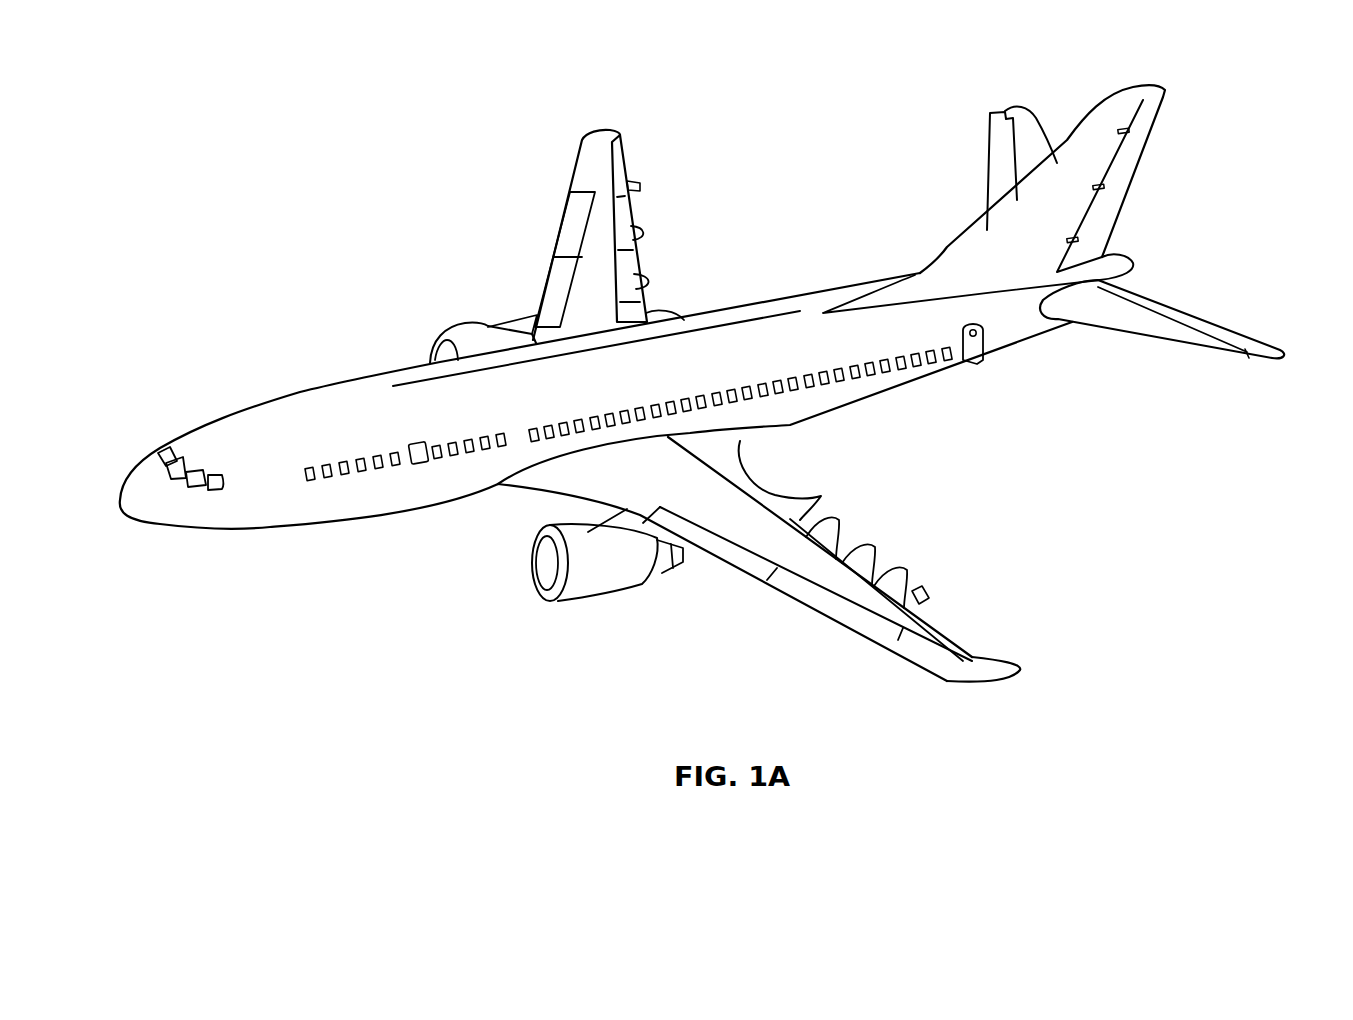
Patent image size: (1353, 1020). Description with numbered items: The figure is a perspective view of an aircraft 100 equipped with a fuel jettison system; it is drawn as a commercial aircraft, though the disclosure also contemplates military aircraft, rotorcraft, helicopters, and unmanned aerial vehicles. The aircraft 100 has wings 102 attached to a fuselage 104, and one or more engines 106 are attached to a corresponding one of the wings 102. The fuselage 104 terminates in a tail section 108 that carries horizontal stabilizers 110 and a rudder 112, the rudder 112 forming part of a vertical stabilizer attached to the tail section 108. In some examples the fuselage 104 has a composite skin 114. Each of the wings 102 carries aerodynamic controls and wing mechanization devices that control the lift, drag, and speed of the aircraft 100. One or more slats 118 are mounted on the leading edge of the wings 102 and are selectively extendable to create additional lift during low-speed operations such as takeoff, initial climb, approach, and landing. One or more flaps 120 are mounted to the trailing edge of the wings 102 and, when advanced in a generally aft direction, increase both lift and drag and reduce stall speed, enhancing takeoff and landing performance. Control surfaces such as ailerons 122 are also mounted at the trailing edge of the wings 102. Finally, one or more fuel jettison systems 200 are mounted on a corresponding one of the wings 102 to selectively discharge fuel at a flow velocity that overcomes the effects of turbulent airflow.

The aircraft 100 is at (303, 246).
The wings 102 is at (620, 137).
The fuselage 104 is at (247, 405).
The engines 106 is at (473, 327).
The tail section 108 is at (1073, 416).
The horizontal stabilizers 110 is at (995, 175).
The rudder 112 is at (1137, 148).
The composite skin 114 is at (737, 318).
The slats 118 is at (560, 273).
The flaps 120 is at (630, 272).
The ailerons 122 is at (622, 175).
The fuel jettison systems 200 is at (633, 185).